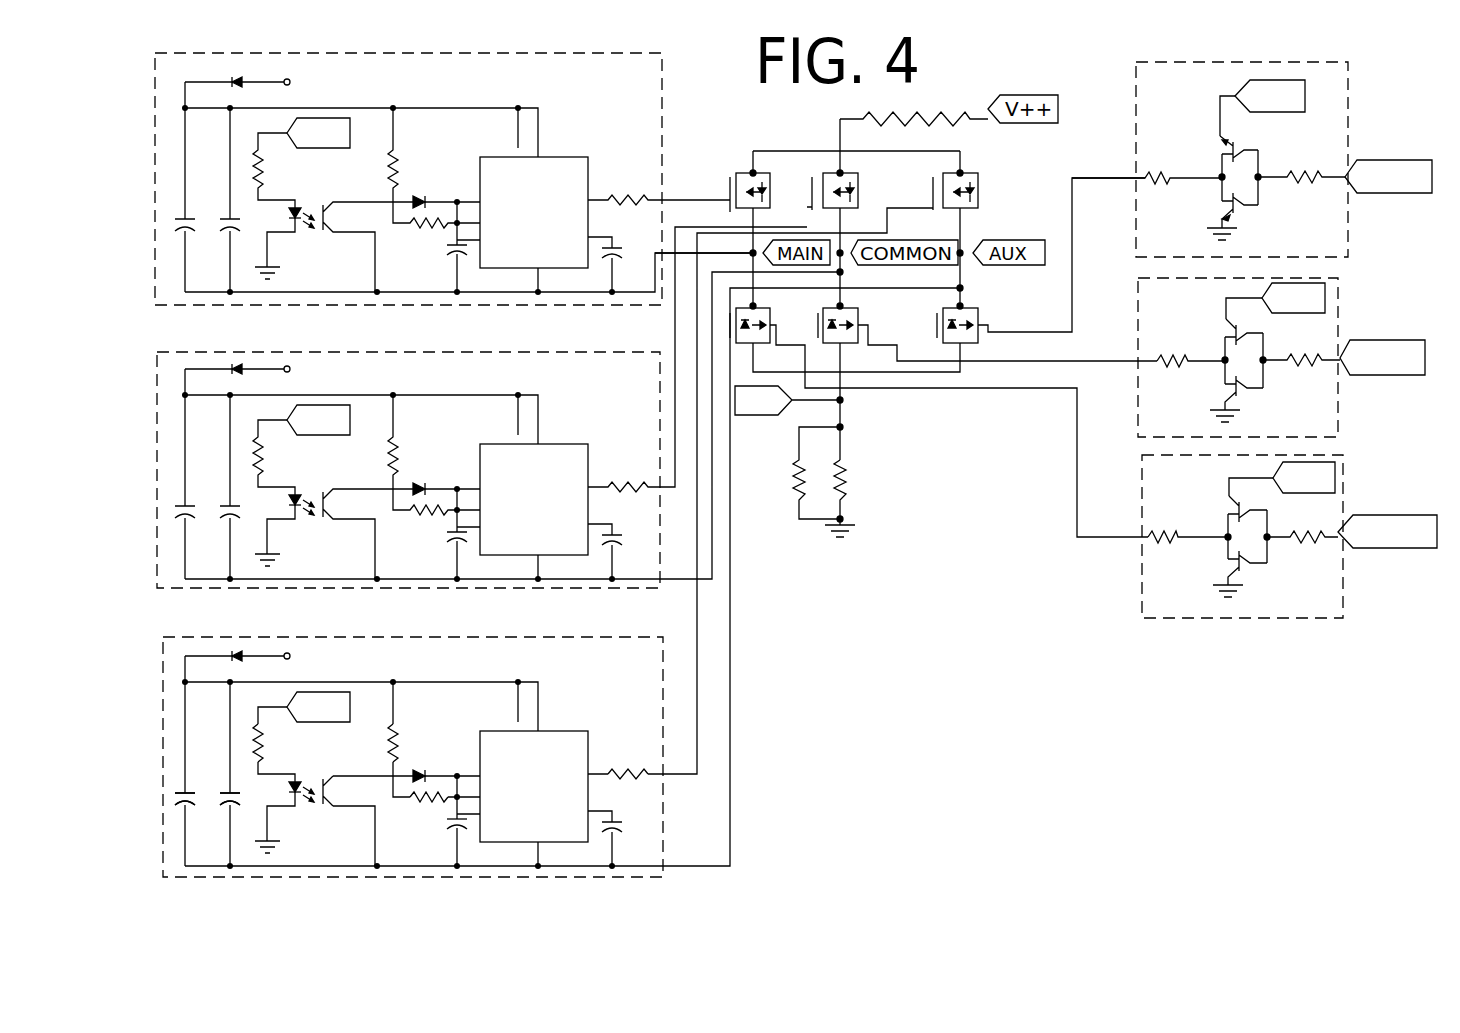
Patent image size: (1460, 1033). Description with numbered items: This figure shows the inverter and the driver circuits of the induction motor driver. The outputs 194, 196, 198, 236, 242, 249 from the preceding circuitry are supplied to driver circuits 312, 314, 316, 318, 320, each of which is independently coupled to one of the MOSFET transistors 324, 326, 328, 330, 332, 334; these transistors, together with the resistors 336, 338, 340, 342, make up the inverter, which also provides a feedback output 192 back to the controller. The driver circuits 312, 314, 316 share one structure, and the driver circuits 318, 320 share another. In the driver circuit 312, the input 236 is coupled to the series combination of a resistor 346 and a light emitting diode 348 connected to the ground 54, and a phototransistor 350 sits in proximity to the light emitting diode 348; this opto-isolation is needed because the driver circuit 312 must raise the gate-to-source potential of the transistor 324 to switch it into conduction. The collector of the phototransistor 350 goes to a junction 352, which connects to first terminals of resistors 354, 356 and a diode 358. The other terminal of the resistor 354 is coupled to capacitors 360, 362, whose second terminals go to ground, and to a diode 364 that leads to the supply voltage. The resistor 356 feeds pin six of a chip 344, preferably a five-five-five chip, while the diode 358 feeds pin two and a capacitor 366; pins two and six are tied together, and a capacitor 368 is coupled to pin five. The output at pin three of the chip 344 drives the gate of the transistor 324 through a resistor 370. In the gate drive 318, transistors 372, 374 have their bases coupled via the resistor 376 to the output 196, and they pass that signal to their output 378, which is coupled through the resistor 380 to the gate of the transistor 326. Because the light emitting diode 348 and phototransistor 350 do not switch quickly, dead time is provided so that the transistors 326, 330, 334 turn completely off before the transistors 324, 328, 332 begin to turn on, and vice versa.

The driver circuit 314 is at (662, 101).
The driver circuit 316 is at (465, 349).
The driver circuit 312 is at (393, 633).
The driver circuit 318 is at (1348, 71).
The transistor 332 is at (848, 172).
The driver circuit 320 is at (1344, 482).
The output 242 is at (312, 148).
The output 249 is at (305, 436).
The input 236 is at (365, 730).
The transistor 328 is at (745, 170).
The transistor 324 is at (970, 172).
The transistor 330 is at (760, 306).
The transistor 334 is at (850, 306).
The transistor 326 is at (972, 305).
The resistor 336 is at (952, 112).
The resistor 338 is at (884, 125).
The feedback output 192 is at (762, 415).
The resistor 340 is at (845, 474).
The resistor 342 is at (797, 478).
The resistor 380 is at (1160, 177).
The output 378 is at (1197, 178).
The transistor 372 is at (1240, 150).
The transistor 374 is at (1240, 210).
The resistor 376 is at (1312, 172).
The output 196 is at (1385, 193).
The output 198 is at (1374, 376).
The output 194 is at (1400, 548).
The chip 344 is at (580, 731).
The resistor 370 is at (620, 768).
The capacitor 368 is at (636, 808).
The capacitor 366 is at (455, 840).
The resistor 356 is at (456, 820).
The diode 358 is at (433, 775).
The junction 352 is at (405, 768).
The resistor 354 is at (397, 742).
The resistor 346 is at (264, 752).
The light emitting diode 348 is at (312, 798).
The phototransistor 350 is at (340, 800).
The ground 54 is at (283, 850).
The capacitor 360 is at (187, 795).
The capacitor 362 is at (240, 803).
The diode 364 is at (244, 656).